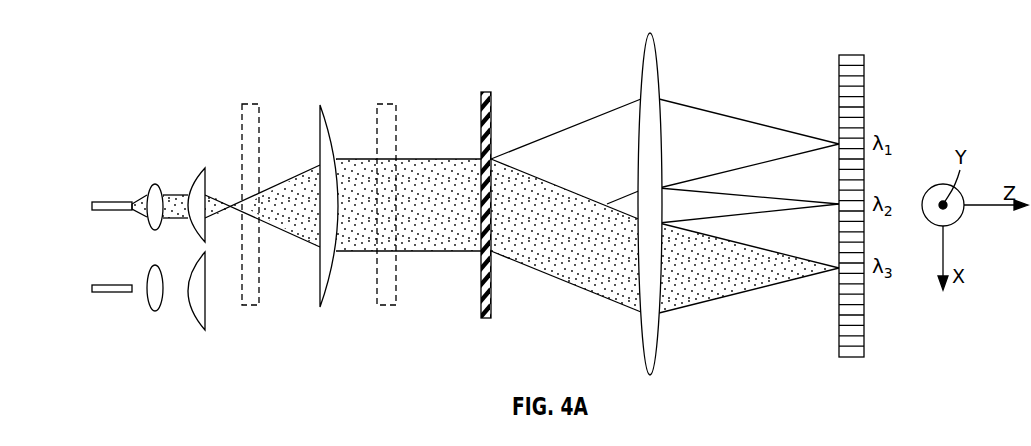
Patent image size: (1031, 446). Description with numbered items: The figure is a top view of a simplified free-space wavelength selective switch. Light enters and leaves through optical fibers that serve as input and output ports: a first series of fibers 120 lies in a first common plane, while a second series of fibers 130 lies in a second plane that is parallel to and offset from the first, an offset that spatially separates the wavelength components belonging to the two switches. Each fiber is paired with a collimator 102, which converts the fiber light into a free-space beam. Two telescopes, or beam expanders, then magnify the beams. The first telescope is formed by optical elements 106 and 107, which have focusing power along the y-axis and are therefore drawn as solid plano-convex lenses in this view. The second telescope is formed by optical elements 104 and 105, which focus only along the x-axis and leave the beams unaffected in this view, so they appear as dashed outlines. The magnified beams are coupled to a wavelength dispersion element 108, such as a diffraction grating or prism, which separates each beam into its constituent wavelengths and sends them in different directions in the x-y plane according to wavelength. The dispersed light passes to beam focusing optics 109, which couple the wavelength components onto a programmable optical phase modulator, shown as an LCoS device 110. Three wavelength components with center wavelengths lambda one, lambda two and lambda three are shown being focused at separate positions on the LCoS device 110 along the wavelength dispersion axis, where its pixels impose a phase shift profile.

The first series of fibers 120 is at (112, 202).
The second series of fibers 130 is at (112, 292).
The collimator 102 is at (155, 184).
The optical element 106 is at (205, 168).
The optical element 104 is at (244, 305).
The optical element 105 is at (394, 305).
The optical element 107 is at (320, 105).
The wavelength dispersion element 108 is at (486, 92).
The beam focusing optics 109 is at (638, 67).
The LCoS device 110 is at (852, 55).